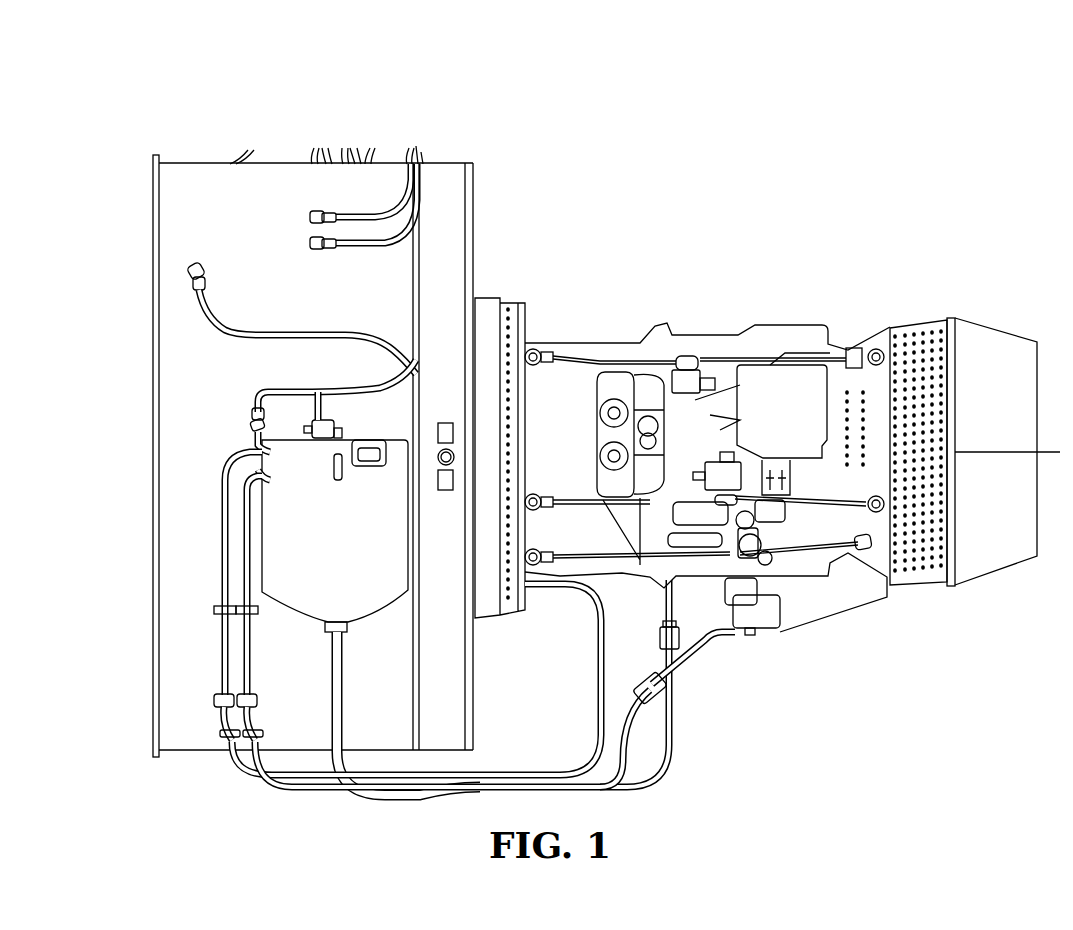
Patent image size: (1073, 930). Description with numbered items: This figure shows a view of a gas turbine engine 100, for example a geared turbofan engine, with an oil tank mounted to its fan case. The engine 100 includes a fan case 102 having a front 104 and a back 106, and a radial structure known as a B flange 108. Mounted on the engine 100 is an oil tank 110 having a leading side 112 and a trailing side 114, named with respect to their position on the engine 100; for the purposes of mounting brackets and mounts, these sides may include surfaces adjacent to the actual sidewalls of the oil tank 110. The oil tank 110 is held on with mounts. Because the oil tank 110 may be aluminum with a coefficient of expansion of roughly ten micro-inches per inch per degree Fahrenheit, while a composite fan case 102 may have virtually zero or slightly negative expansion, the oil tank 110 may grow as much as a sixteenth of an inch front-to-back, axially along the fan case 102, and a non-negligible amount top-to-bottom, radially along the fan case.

The engine 100 is at (679, 43).
The fan case 102 is at (248, 272).
The front 104 is at (153, 292).
The back 106 is at (477, 209).
The B flange 108 is at (420, 250).
The oil tank 110 is at (302, 568).
The leading side 112 is at (255, 458).
The trailing side 114 is at (410, 577).